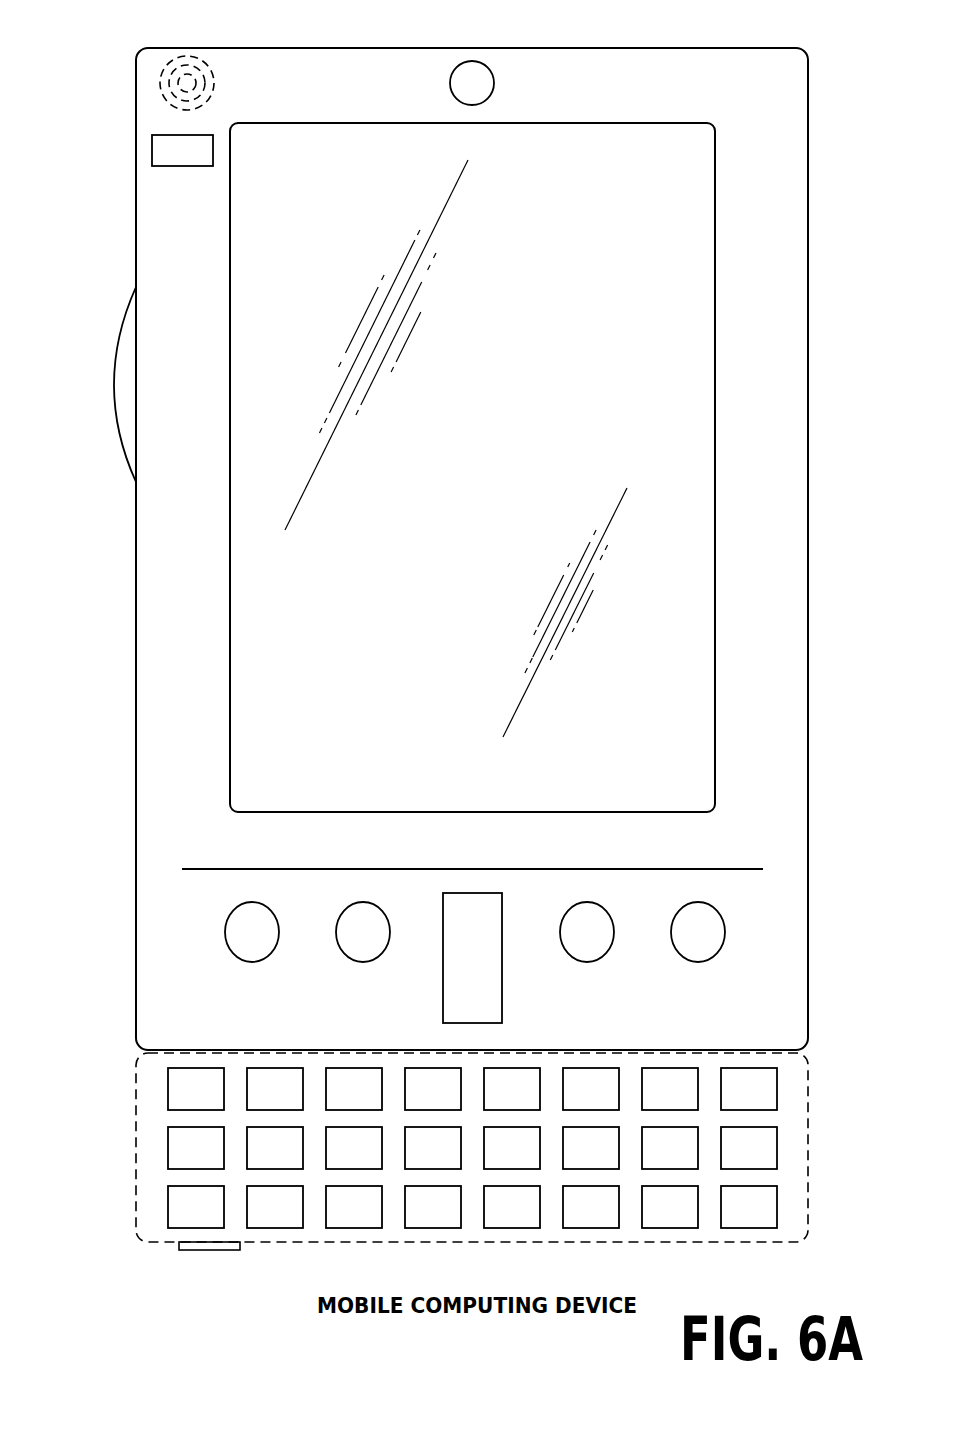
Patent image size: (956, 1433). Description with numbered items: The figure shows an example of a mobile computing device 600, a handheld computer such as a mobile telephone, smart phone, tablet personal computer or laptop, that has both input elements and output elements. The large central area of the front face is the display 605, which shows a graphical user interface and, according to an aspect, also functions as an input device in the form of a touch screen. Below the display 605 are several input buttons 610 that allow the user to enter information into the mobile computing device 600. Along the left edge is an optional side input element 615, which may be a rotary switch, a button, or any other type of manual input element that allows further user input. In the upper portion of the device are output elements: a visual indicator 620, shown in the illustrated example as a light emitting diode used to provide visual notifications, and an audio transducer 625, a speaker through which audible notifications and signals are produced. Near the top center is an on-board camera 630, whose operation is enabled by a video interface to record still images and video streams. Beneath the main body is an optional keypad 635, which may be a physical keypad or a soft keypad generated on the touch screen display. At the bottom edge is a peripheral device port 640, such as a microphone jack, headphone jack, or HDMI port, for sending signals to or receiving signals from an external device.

The mobile computing device 600 is at (772, 48).
The display 605 is at (253, 644).
The input buttons 610 is at (252, 962).
The side input element 615 is at (114, 387).
The visual indicator 620 is at (152, 150).
The audio transducer 625 is at (158, 89).
The on-board camera 630 is at (470, 62).
The keypad 635 is at (147, 1147).
The peripheral device port 640 is at (187, 1250).